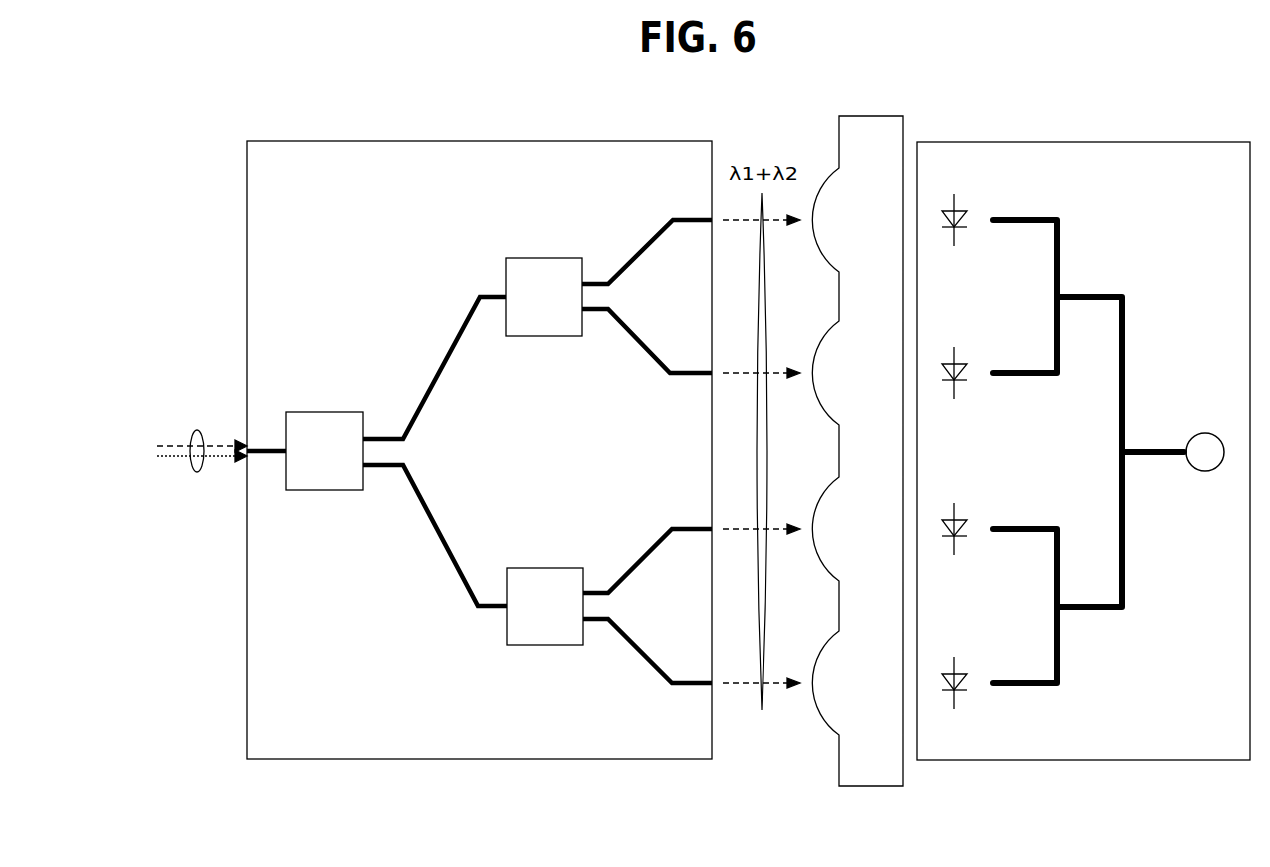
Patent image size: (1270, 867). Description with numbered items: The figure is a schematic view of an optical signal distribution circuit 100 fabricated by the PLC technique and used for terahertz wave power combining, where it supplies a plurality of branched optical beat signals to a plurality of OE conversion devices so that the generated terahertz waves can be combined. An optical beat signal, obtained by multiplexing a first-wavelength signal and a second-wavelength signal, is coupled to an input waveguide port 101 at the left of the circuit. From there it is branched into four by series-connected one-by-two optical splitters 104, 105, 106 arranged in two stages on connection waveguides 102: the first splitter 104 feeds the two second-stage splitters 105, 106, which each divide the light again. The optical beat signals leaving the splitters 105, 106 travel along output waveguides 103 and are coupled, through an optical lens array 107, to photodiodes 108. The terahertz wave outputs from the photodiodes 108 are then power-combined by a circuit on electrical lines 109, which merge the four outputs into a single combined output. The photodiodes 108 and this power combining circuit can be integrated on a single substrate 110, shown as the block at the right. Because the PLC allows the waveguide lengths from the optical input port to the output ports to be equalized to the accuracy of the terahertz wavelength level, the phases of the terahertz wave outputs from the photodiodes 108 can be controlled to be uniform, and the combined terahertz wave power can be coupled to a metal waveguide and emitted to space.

The optical signal distribution circuit 100 is at (330, 141).
The input waveguide port 101 is at (248, 450).
The connection waveguides 102 is at (402, 285).
The output waveguides 103 is at (673, 215).
The 1×2 optical splitter 104 is at (403, 393).
The 1×2 optical splitter 105 is at (482, 245).
The 1×2 optical splitter 106 is at (480, 557).
The optical lens array 107 is at (866, 116).
The photodiodes 108 is at (928, 192).
The electrical lines 109 is at (1185, 202).
The substrate 110 is at (1148, 142).